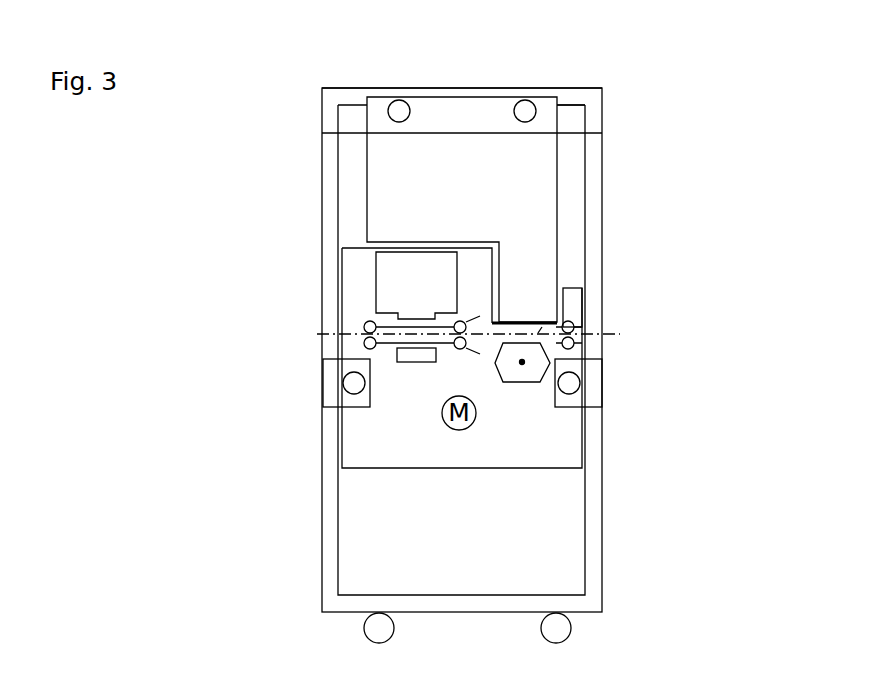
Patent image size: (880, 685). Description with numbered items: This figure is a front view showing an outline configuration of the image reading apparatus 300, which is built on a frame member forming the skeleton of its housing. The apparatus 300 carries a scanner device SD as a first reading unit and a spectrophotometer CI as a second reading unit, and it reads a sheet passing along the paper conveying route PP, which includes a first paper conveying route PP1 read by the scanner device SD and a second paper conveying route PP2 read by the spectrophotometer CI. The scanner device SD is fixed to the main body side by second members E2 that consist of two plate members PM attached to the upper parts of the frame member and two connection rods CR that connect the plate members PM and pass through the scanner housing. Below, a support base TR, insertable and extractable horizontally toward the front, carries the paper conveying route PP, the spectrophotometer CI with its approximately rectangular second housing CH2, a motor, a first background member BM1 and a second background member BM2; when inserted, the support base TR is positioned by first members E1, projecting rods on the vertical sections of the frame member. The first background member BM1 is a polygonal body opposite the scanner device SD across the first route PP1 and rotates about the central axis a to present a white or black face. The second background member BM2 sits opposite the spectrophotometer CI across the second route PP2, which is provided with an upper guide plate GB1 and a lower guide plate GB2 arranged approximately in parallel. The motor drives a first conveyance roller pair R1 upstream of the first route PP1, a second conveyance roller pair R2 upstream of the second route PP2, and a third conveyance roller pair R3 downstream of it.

The image reading apparatus 300 is at (670, 81).
The second members E2 is at (625, 41).
The connection rods CR is at (400, 113).
The plate members PM is at (582, 100).
The scanner device SD is at (541, 172).
The second housing CH2 is at (340, 247).
The spectrophotometer CI is at (383, 280).
The support base TR is at (555, 470).
The second paper conveying route PP2 is at (340, 330).
The upper guide plate GB1 is at (375, 322).
The lower guide plate GB2 is at (364, 343).
The third conveyance roller pair R3 is at (352, 320).
The first paper conveying route PP1 is at (553, 316).
The paper conveying route PP is at (593, 336).
The first conveyance roller pair R1 is at (592, 344).
The first member E1 is at (323, 400).
The second background member BM2 is at (411, 357).
The second conveyance roller pair R2 is at (453, 358).
The first background member BM1 is at (524, 382).
The central axis a is at (522, 365).